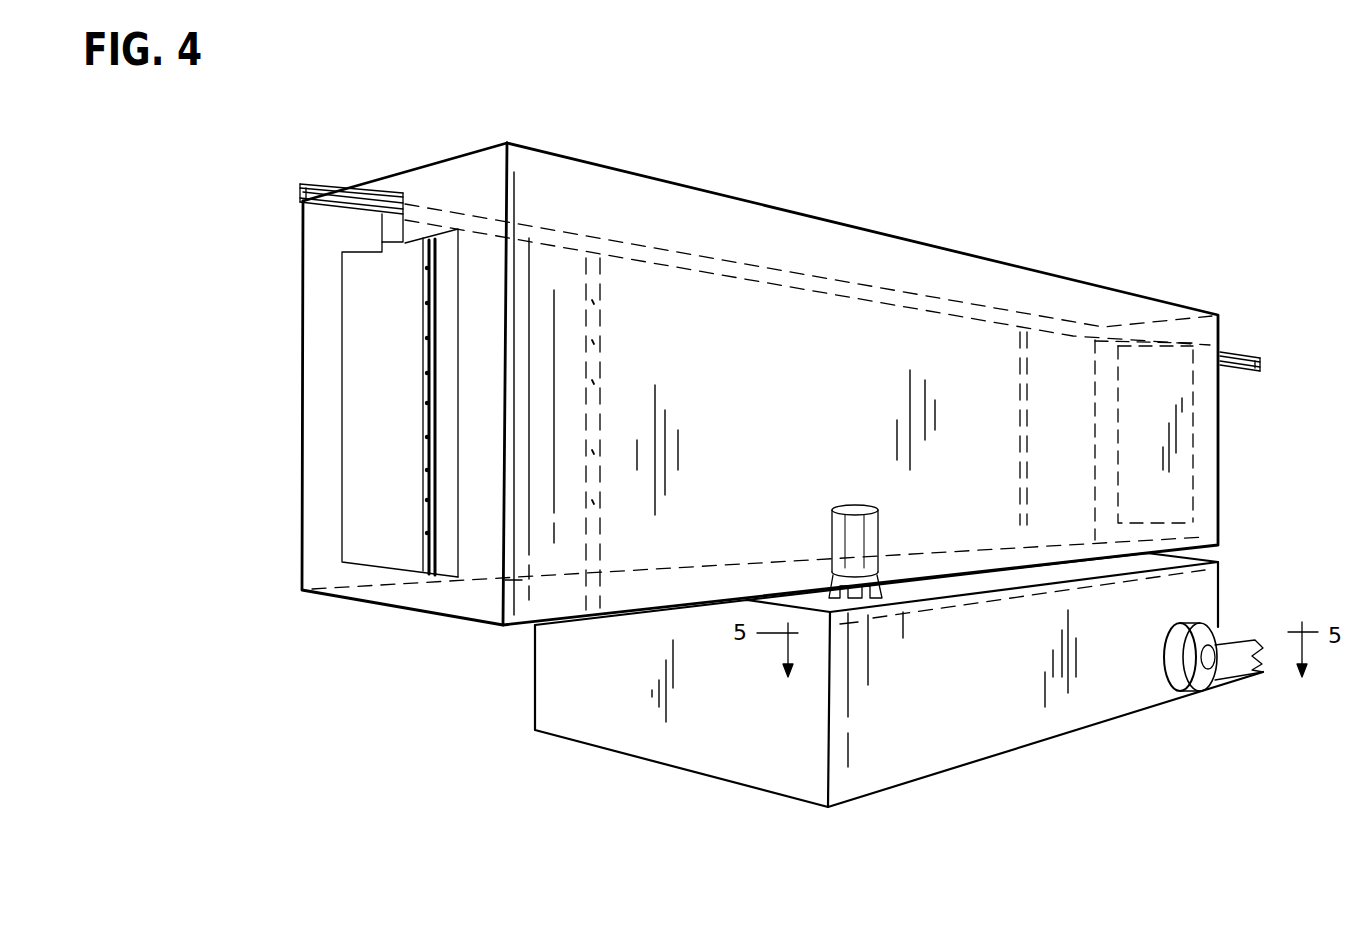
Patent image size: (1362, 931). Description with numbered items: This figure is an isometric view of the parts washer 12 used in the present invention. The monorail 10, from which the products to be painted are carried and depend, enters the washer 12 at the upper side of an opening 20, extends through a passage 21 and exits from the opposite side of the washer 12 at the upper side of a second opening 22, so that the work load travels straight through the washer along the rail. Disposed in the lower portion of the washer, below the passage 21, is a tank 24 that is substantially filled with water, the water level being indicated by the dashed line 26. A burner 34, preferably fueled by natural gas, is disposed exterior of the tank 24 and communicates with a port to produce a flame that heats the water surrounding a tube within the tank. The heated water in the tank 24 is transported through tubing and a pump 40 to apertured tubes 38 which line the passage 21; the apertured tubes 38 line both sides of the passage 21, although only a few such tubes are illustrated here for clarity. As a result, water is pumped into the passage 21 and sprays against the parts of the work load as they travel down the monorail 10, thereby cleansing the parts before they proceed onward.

The monorail 10 is at (323, 183).
The washer 12 is at (760, 384).
The opening 20 is at (362, 378).
The passage 21 is at (848, 337).
The second opening 22 is at (1193, 451).
The tank 24 is at (899, 680).
The water level 26 is at (1137, 583).
The burner 34 is at (1184, 694).
The apertured tubes 38 is at (422, 477).
The pump 40 is at (832, 542).